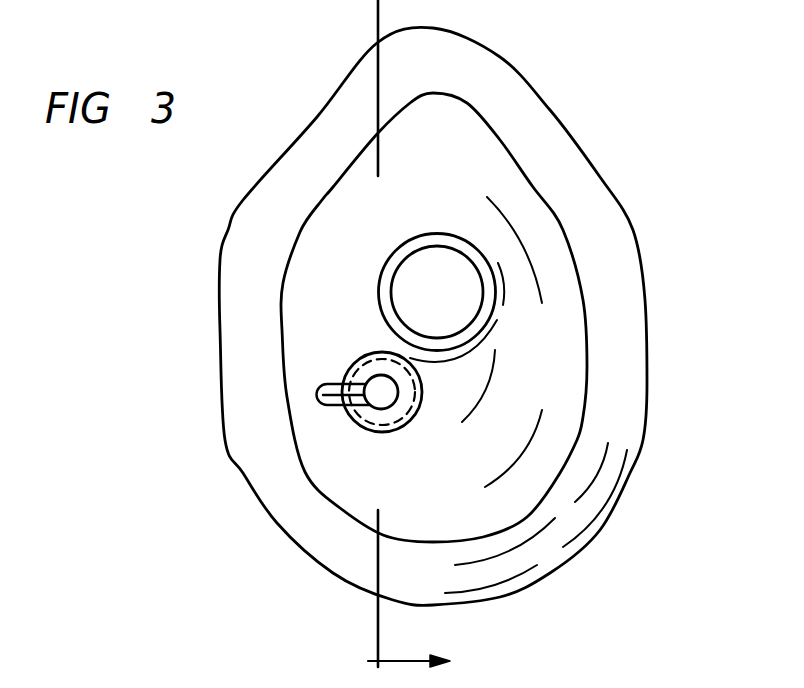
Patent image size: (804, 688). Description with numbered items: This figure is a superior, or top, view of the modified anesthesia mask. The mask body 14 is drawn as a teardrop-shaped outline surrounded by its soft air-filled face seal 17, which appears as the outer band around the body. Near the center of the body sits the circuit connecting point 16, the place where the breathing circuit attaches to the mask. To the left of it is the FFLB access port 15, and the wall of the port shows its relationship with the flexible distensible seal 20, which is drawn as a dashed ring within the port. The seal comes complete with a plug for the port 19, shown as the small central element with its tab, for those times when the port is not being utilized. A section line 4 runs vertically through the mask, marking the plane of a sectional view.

The section line 4- 4 is at (398, 344).
The mask body 14 is at (448, 188).
The exhalation valve 15 is at (354, 362).
The connector opening 16 is at (452, 308).
The sealing cushion 17 is at (612, 307).
The pin 19 is at (371, 387).
The valve flap 20 is at (371, 419).